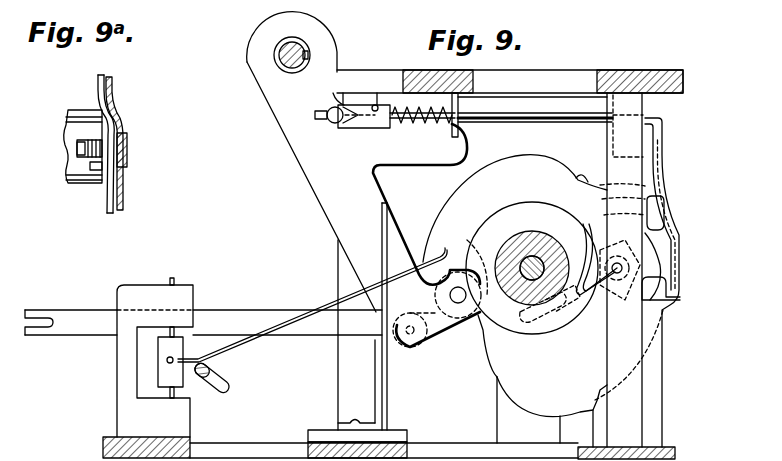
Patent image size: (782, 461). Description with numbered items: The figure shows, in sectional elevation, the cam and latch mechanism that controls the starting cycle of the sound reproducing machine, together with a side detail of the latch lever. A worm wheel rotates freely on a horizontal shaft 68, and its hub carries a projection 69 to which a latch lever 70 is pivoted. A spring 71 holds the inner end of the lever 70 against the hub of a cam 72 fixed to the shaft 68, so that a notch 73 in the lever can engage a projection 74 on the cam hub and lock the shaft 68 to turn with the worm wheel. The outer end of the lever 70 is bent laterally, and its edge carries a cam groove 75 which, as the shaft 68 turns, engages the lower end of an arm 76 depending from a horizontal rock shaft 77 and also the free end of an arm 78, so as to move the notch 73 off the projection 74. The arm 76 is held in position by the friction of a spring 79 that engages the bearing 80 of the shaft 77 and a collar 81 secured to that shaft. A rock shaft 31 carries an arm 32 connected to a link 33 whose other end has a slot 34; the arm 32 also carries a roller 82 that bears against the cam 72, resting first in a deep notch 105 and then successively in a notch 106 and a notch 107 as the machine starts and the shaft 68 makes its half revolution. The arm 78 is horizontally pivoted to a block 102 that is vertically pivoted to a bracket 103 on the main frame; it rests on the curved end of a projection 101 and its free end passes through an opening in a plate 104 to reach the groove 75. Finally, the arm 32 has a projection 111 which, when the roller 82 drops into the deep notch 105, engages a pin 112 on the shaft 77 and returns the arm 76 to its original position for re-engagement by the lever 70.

In FIG. 9, the rock shaft 31 is at (278, 62).
In FIG. 9, the arm 32 is at (328, 196).
In FIG. 9, the link 33 is at (278, 314).
In FIG. 9, the slot 34 is at (42, 318).
In FIG. 9, the horizontal shaft 68 is at (522, 250).
In FIG. 9, the projection 69 is at (535, 205).
In FIG. 9A, the latch lever 70 is at (114, 120).
In FIG. 9, the latch lever 70 is at (662, 223).
In FIG. 9A, the spring 71 is at (100, 128).
In FIG. 9, the spring 71 is at (593, 230).
In FIG. 9, the cam 72 is at (580, 378).
In FIG. 9, the notch 73 is at (565, 315).
In FIG. 9, the projection 74 is at (548, 318).
In FIG. 9A, the cam groove 75 is at (106, 75).
In FIG. 9, the arm 76 is at (662, 178).
In FIG. 9, the horizontal rock shaft 77 is at (528, 118).
In FIG. 9, the arm 78 is at (333, 303).
In FIG. 9, the spring 79 is at (422, 125).
In FIG. 9, the bearing 80 is at (460, 124).
In FIG. 9, the collar 81 is at (356, 128).
In FIG. 9, the roller 82 is at (458, 304).
In FIG. 9, the projection 101 is at (228, 374).
In FIG. 9, the block 102 is at (180, 390).
In FIG. 9, the bracket 103 is at (120, 372).
In FIG. 9, the plate 104 is at (382, 250).
In FIG. 9, the deep notch 105 is at (474, 243).
In FIG. 9, the notch 106 is at (492, 333).
In FIG. 9, the notch 107 is at (585, 183).
In FIG. 9, the projection 111 is at (400, 152).
In FIG. 9, the pin 112 is at (375, 115).